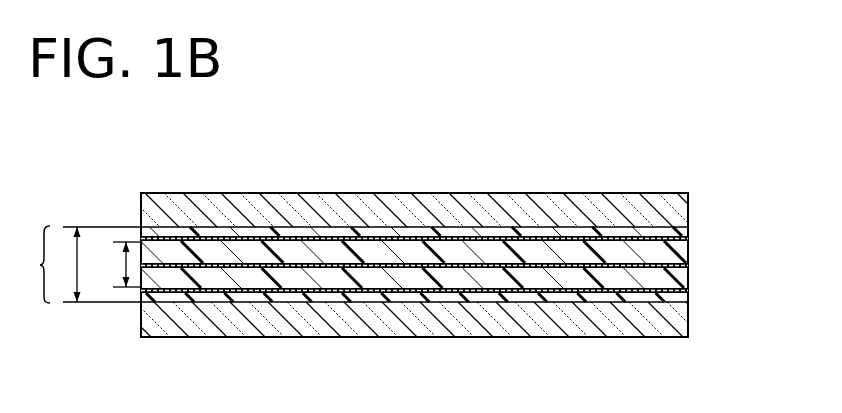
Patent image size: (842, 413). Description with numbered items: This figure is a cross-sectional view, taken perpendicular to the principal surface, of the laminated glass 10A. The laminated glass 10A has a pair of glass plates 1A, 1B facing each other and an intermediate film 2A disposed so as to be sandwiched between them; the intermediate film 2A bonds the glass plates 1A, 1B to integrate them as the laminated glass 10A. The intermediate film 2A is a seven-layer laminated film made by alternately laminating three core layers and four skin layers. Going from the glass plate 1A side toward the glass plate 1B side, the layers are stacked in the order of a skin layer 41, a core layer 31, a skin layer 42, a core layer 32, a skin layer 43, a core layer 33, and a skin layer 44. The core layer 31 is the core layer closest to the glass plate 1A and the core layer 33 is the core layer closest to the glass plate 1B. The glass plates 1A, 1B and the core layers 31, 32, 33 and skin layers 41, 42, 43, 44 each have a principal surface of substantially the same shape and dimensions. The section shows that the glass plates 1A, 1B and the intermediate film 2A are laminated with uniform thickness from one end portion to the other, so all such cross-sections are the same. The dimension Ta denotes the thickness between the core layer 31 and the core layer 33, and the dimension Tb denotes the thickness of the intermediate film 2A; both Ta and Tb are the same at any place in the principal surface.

The laminated glass 10A is at (416, 178).
The glass plate 1A is at (641, 336).
The glass plate 1B is at (644, 193).
The intermediate film 2A is at (29, 264).
The skin layer 44 is at (688, 231).
The skin layer 43 is at (689, 249).
The skin layer 42 is at (689, 281).
The skin layer 41 is at (688, 302).
The core layer 33 is at (690, 239).
The core layer 32 is at (688, 265).
The core layer 31 is at (688, 292).
The thickness between the core layers Ta is at (120, 264).
The thickness of the intermediate film Tb is at (96, 264).